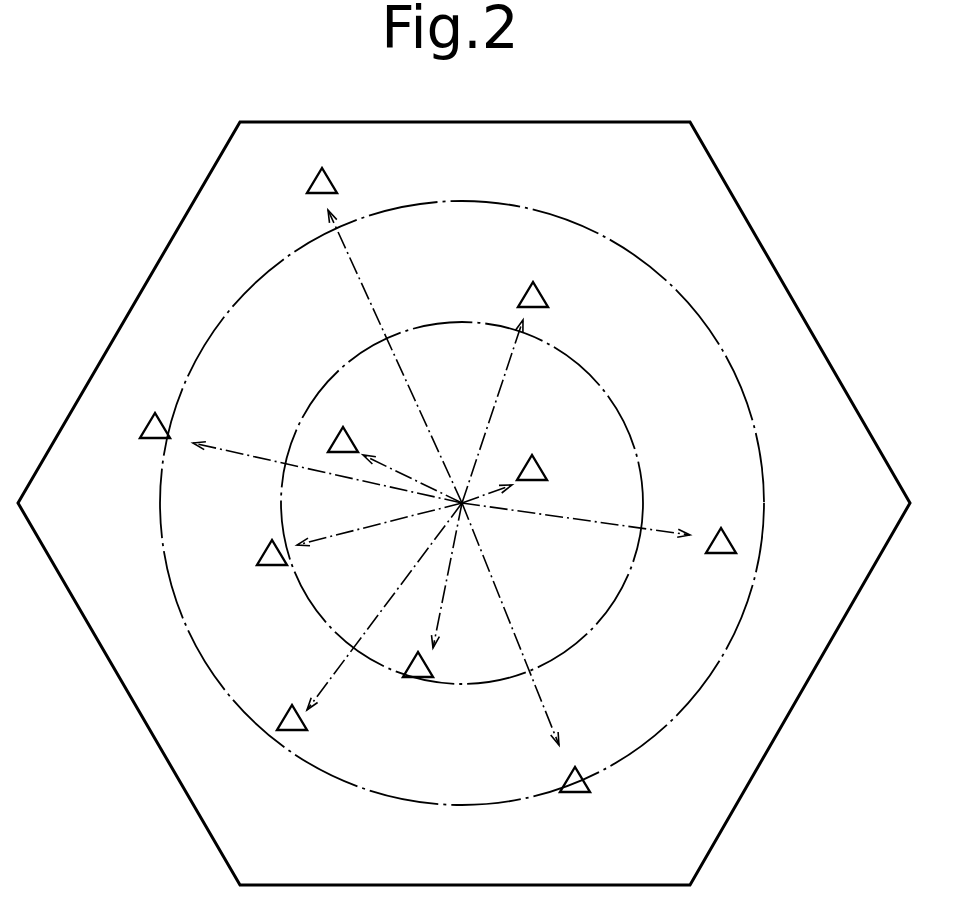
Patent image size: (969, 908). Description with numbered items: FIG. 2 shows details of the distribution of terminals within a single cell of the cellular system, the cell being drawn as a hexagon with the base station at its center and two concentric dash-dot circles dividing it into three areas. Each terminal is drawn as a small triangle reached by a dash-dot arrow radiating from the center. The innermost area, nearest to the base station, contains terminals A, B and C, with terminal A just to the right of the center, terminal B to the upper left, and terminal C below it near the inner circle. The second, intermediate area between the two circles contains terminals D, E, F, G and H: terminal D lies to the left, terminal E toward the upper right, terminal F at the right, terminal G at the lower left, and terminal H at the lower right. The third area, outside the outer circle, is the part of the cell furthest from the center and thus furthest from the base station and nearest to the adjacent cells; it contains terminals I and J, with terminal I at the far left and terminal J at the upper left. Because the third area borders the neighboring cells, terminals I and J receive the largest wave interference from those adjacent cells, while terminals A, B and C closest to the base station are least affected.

The terminal A is at (504, 463).
The terminal B is at (395, 447).
The terminal C is at (432, 590).
The terminal D is at (359, 534).
The terminal E is at (505, 374).
The terminal F is at (599, 524).
The terminal G is at (369, 616).
The terminal H is at (526, 647).
The terminal I is at (301, 439).
The terminal J is at (384, 319).